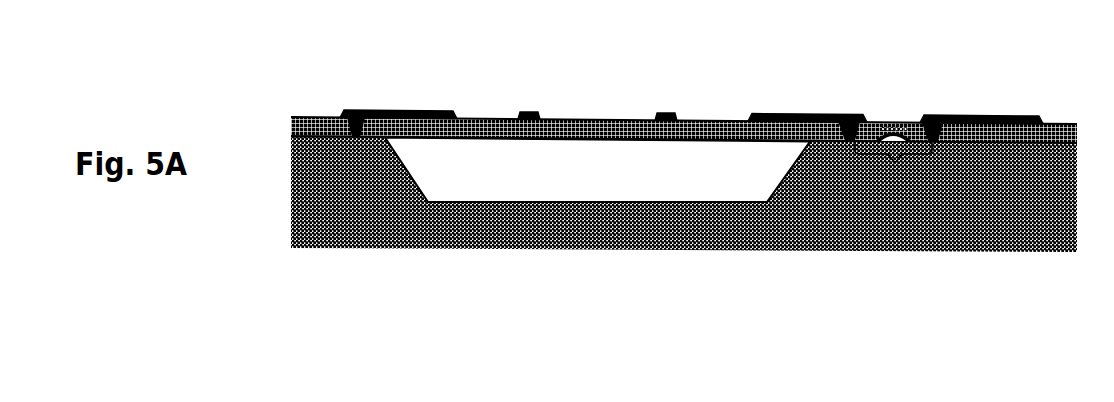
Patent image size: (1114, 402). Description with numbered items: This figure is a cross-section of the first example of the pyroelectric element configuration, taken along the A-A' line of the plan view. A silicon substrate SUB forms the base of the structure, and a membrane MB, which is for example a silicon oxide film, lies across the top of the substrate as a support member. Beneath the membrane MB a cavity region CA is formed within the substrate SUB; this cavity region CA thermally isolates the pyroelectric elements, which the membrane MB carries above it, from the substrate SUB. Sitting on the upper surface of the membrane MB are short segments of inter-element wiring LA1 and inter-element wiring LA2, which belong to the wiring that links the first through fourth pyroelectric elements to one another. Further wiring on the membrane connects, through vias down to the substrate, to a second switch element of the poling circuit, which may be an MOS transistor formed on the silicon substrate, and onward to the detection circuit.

The inter-element wiring LA2 is at (528, 111).
The inter-element wiring LA1 is at (663, 112).
The membrane MB is at (604, 139).
The cavity region CA is at (528, 187).
The substrate SUB is at (1005, 243).